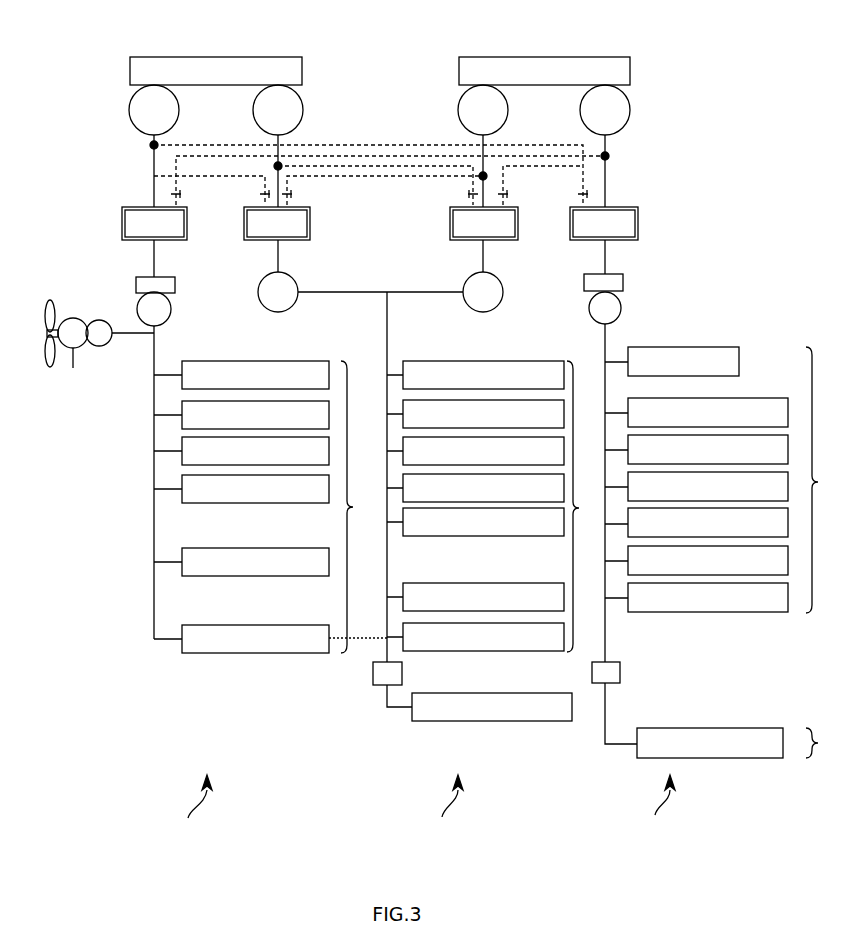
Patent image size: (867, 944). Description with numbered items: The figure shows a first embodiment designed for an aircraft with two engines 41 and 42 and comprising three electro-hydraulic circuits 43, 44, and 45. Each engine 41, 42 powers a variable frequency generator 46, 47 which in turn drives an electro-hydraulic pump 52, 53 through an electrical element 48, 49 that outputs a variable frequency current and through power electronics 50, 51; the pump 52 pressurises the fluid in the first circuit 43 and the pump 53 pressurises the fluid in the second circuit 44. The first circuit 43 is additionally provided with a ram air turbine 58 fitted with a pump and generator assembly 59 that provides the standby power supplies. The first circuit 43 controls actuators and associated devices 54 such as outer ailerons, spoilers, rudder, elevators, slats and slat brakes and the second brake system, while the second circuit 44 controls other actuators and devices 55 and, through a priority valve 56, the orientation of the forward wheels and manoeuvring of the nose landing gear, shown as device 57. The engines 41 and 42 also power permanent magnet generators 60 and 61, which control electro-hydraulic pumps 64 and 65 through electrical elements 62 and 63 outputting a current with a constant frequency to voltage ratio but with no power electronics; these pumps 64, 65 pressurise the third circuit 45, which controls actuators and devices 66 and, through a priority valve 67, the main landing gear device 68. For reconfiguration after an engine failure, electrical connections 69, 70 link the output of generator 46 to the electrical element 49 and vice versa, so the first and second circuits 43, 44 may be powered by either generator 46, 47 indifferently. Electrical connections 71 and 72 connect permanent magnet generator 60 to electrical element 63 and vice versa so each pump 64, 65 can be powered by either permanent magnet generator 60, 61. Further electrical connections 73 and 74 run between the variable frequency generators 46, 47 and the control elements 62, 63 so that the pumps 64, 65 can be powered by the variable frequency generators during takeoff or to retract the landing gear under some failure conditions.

The engine 41 is at (220, 62).
The engine 42 is at (508, 62).
The first circuit 43 is at (183, 584).
The second circuit 44 is at (640, 583).
The third circuit 45 is at (380, 566).
The variable frequency generator 46 is at (131, 110).
The variable frequency generator 47 is at (624, 108).
The electrical element 48 is at (122, 222).
The electrical element 49 is at (640, 214).
The power electronics 50 is at (136, 283).
The power electronics 51 is at (617, 283).
The electro-hydraulic pump 52 is at (172, 310).
The electro-hydraulic pump 53 is at (613, 312).
The actuators and associated devices 54 is at (268, 507).
The actuators and devices 55 is at (725, 480).
The priority valve 56 is at (620, 670).
The nose landing gear device 57 is at (725, 720).
The ram air turbine 58 is at (74, 318).
The pump and generator assembly 59 is at (97, 320).
The permanent magnet generator 60 is at (291, 98).
The permanent magnet generator 61 is at (465, 112).
The electrical element 62 is at (310, 224).
The electrical element 63 is at (450, 224).
The electro-hydraulic pump 64 is at (258, 290).
The electro-hydraulic pump 65 is at (465, 285).
The actuators and devices 66 is at (467, 506).
The priority valve 67 is at (373, 676).
The main landing gear device 68 is at (425, 716).
The electrical connection 69 is at (304, 143).
The electrical connection 70 is at (368, 154).
The electrical connection 71 is at (317, 167).
The electrical connection 72 is at (357, 177).
The electrical connection 73 is at (201, 178).
The electrical connection 74 is at (563, 167).